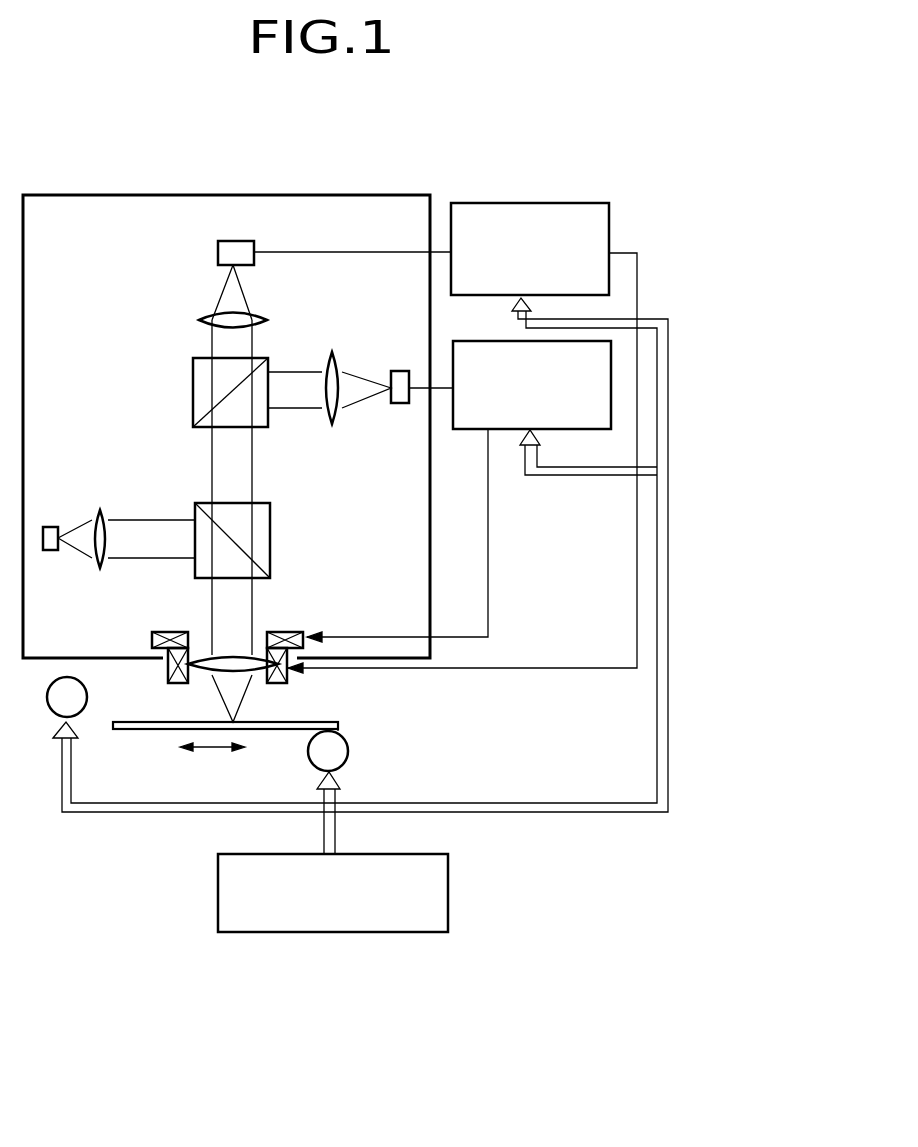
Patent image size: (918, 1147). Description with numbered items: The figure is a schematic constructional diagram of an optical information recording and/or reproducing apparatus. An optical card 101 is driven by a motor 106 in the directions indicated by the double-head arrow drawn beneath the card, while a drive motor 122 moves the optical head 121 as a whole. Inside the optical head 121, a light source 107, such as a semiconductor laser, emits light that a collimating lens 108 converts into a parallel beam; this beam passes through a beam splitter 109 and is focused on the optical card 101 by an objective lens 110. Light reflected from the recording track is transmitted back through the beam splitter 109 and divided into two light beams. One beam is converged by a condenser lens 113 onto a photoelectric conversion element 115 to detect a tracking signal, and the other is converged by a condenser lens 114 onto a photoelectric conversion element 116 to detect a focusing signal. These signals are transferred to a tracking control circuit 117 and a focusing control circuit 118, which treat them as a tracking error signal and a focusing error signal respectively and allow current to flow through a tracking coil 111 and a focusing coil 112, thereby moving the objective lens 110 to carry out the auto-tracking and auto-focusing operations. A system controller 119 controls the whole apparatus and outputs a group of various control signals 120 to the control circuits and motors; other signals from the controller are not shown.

The optical card 101 is at (130, 730).
The motor 106 is at (350, 751).
The light source 107 is at (55, 552).
The collimating lens 108 is at (108, 545).
The beam splitter 109 is at (193, 376).
The objective lens 110 is at (228, 652).
The tracking coil 111 is at (300, 630).
The focusing coil 112 is at (290, 680).
The condenser lens 113 is at (332, 352).
The condenser lens 114 is at (205, 318).
The photoelectric conversion element 115 is at (400, 370).
The photoelectric conversion element 116 is at (255, 247).
The tracking control circuit 117 is at (497, 341).
The focusing control circuit 118 is at (537, 203).
The system controller 119 is at (338, 932).
The control signals 120 is at (522, 813).
The optical head 121 is at (118, 195).
The drive motor 122 is at (88, 697).